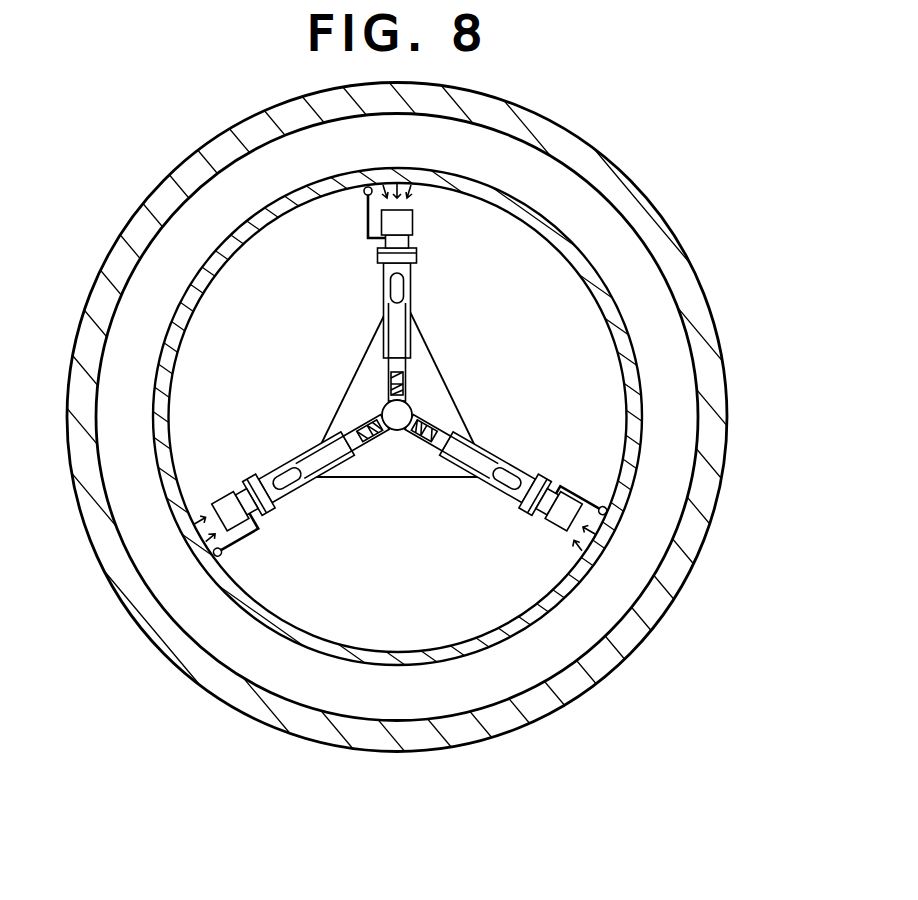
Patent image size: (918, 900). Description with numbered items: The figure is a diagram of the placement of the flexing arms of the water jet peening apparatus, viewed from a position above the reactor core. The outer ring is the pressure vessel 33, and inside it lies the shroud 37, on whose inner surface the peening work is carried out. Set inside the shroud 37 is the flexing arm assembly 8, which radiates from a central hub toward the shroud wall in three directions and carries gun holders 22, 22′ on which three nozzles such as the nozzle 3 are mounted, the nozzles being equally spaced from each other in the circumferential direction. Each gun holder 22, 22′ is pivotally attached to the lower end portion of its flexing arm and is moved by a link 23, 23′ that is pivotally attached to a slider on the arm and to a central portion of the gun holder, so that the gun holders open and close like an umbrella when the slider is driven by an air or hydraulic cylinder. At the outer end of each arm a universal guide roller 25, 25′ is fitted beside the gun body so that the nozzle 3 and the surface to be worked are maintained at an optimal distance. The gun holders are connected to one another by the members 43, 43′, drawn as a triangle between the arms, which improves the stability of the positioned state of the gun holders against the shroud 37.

The nozzle 3 is at (406, 222).
The flexing arm assembly 8 is at (386, 407).
The gun holder 22 is at (412, 340).
The gun holder 22′ is at (514, 368).
The link 23 is at (388, 330).
The arm member 23′ is at (488, 485).
The universal guide roller 25 is at (364, 221).
The holder bracket 25′ is at (608, 420).
The pressure vessel 33 is at (727, 428).
The shroud 37 is at (607, 319).
The member 43 is at (438, 352).
The connecting line 43′ is at (409, 480).